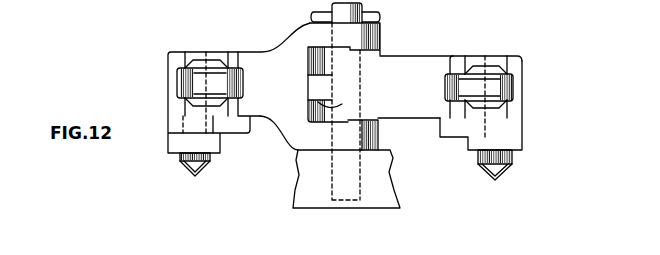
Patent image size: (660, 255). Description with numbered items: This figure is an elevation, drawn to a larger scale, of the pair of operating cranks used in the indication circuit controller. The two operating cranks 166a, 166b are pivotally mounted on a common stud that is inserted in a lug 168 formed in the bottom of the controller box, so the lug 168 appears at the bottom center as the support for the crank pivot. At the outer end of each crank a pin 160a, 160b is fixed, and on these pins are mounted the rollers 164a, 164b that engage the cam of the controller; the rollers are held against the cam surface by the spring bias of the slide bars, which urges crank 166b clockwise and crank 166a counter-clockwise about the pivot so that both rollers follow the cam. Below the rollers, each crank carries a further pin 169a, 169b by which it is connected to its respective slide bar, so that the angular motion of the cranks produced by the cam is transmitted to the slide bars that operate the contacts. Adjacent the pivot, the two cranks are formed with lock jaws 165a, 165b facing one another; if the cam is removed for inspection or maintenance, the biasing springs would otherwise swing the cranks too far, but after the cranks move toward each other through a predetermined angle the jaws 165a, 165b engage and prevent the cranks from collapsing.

The pin 160a is at (227, 62).
The pin 160b is at (490, 66).
The roller 164a is at (178, 84).
The roller 164b is at (514, 86).
The lock jaw 165a is at (308, 92).
The lock jaw 165b is at (335, 104).
The operating crank 166a is at (263, 53).
The operating crank 166b is at (428, 49).
The lug 168 is at (386, 200).
The pin 169a is at (181, 156).
The pin 169b is at (512, 160).